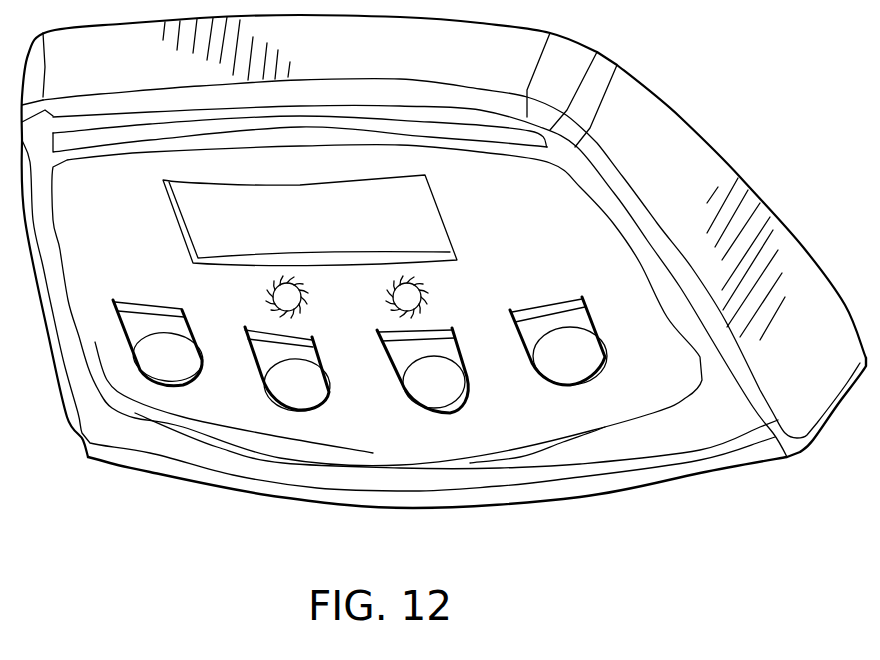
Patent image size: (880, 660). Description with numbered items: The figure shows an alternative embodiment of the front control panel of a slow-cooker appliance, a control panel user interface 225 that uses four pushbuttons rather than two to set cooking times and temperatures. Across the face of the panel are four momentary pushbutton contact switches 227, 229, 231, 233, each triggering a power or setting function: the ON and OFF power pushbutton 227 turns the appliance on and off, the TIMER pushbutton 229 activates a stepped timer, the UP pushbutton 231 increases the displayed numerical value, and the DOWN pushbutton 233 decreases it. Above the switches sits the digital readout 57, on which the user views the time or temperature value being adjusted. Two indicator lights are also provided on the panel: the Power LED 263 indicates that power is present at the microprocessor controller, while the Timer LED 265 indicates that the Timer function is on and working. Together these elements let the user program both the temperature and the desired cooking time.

The control panel user interface 225 is at (575, 500).
The digital readout 57 is at (440, 217).
The Power LED 263 is at (265, 296).
The Timer LED 265 is at (428, 293).
The ON and OFF power pushbutton 227 is at (177, 372).
The TIMER pushbutton 229 is at (305, 397).
The UP pushbutton 231 is at (445, 402).
The DOWN pushbutton 233 is at (585, 370).